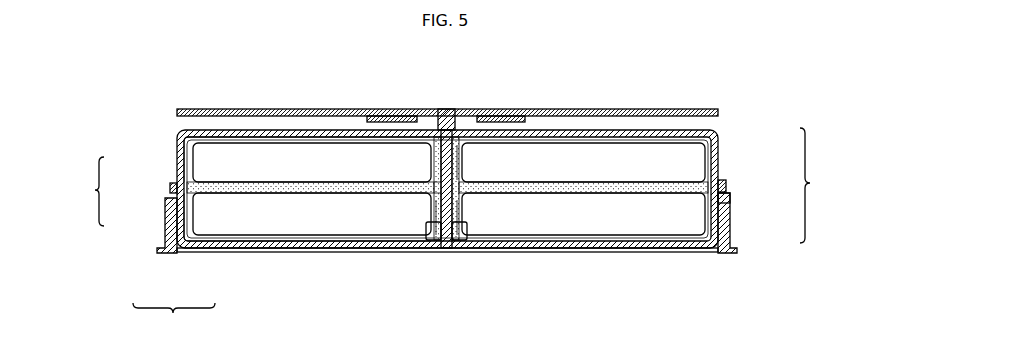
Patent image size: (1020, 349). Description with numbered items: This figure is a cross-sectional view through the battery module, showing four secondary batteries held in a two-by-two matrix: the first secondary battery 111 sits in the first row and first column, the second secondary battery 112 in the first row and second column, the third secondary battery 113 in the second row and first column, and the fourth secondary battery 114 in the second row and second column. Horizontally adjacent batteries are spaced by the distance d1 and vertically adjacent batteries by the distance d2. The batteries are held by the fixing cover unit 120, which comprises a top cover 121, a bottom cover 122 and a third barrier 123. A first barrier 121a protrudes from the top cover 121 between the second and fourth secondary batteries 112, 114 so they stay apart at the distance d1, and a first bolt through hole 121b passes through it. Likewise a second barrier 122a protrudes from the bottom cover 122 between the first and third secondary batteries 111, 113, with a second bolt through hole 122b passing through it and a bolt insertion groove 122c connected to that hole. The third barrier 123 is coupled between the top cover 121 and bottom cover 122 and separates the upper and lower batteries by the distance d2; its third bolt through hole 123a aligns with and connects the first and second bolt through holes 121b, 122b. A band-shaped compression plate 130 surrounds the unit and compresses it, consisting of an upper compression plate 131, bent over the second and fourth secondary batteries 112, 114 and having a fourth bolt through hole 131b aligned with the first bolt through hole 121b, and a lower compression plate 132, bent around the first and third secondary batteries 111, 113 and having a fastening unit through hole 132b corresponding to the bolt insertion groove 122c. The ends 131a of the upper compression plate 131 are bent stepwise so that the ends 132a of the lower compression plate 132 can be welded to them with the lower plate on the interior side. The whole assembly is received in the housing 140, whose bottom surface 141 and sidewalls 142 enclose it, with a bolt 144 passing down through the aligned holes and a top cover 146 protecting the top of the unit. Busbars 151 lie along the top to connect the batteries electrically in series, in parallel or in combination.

The first secondary battery 111 is at (312, 214).
The second secondary battery 112 is at (312, 162).
The third secondary battery 113 is at (583, 214).
The fourth secondary battery 114 is at (303, 296).
The fixing cover unit 120 is at (82, 191).
The top cover 121 is at (177, 162).
The first barrier 121a is at (460, 172).
The first bolt through hole 121b is at (438, 113).
The bottom cover 122 is at (170, 217).
The second barrier 122a is at (460, 212).
The second bolt through hole 122b is at (436, 205).
The bolt insertion groove 122c is at (429, 240).
The third barrier 123 is at (171, 189).
The third bolt through hole 123a is at (434, 188).
The compression plate 130 is at (821, 185).
The upper compression plate 131 is at (718, 140).
The ends of the upper compression plate 131a is at (723, 182).
The fourth bolt through hole 131b is at (456, 113).
The lower compression plate 132 is at (722, 216).
The ends of the lower compression plate 132a is at (725, 197).
The fastening unit through hole 132b is at (460, 241).
The housing 140 is at (174, 319).
The bottom surface 141 is at (202, 251).
The sidewall 142 is at (168, 232).
The bolt 144 is at (446, 109).
The top cover 146 is at (620, 109).
The busbar 151 is at (385, 113).
The distance d1 is at (415, 152).
The distance d2 is at (368, 198).